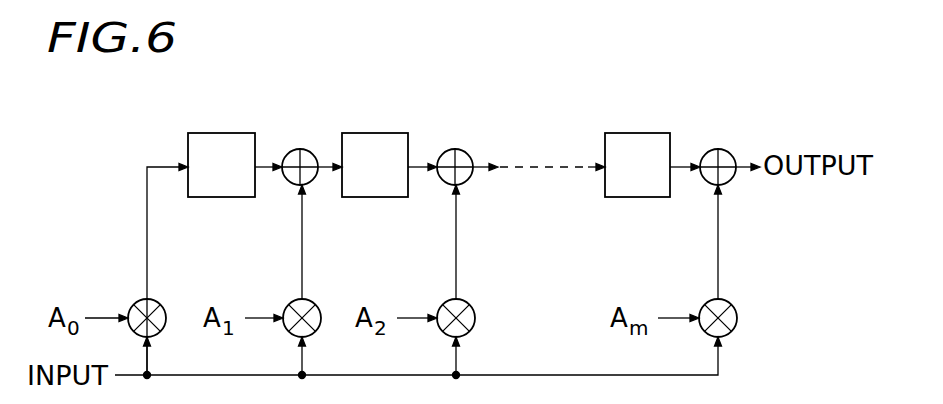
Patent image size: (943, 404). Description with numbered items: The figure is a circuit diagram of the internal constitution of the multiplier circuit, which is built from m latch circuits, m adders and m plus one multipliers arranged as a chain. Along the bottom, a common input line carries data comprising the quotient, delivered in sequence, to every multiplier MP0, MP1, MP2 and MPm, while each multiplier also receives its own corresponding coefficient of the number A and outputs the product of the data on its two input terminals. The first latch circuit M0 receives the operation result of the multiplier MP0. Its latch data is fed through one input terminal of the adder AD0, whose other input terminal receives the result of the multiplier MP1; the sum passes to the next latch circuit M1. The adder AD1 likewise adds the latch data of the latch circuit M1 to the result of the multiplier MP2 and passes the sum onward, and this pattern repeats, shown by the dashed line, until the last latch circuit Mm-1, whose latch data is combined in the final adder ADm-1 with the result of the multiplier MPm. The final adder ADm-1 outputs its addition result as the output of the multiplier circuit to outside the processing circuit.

The first latch circuit M0 is at (221, 165).
The latch circuit M1 is at (375, 165).
The latch circuit Mm-1 is at (637, 165).
The adder AD0 is at (300, 149).
The adder AD1 is at (455, 149).
The final adder ADm-1 is at (718, 149).
The multiplier MP0 is at (161, 305).
The multiplier MP1 is at (316, 305).
The multiplier MP2 is at (470, 305).
The multiplier MPm is at (732, 305).